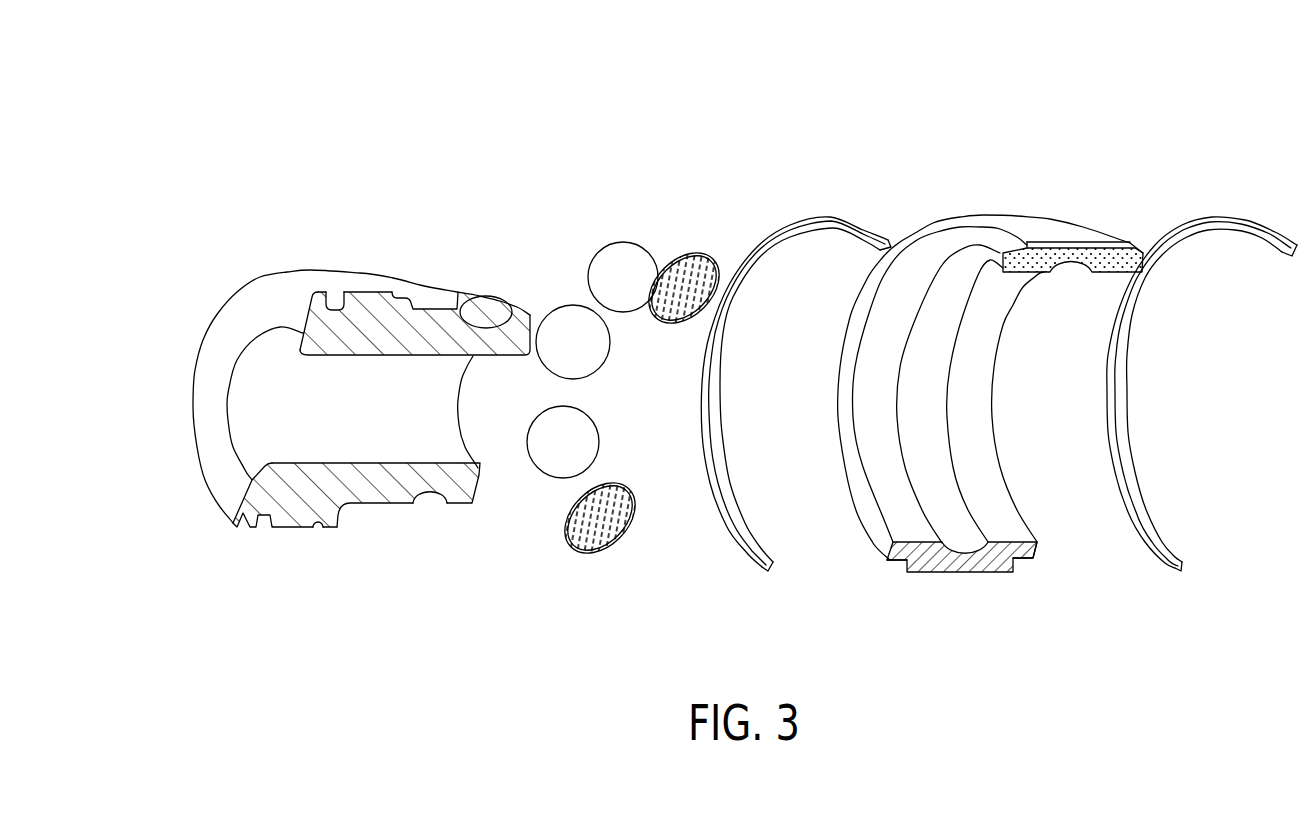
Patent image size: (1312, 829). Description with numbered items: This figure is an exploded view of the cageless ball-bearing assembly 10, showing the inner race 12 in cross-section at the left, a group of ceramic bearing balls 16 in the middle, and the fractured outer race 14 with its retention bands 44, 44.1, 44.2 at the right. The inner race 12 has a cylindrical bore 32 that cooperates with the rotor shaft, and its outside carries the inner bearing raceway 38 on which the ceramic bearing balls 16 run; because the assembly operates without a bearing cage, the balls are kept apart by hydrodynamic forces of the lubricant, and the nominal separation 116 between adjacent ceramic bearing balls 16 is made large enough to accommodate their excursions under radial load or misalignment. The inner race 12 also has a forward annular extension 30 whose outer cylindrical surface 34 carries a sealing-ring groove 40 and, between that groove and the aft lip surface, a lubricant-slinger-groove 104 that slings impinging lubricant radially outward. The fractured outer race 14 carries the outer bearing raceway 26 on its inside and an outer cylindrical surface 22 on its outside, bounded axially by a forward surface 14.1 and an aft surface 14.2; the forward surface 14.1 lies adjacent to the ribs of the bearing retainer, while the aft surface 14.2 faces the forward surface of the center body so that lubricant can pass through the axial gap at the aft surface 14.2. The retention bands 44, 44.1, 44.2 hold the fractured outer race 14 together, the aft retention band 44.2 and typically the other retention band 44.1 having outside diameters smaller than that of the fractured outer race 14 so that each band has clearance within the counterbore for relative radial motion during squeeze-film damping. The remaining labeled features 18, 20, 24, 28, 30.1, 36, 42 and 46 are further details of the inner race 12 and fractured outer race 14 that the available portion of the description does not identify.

The ball-bearing assembly 10 is at (1199, 151).
The inner race 12 is at (377, 505).
The fractured outer race 14 is at (967, 572).
The forward surface of the fractured outer race 14.1 is at (890, 545).
The aft surface of the fractured outer race 14.2 is at (1037, 557).
The ceramic bearing balls 16 is at (610, 342).
The base body 18 is at (1089, 229).
The intermediate layer 20 is at (1085, 245).
The outer cylindrical surface of the fractured outer race 22 is at (1027, 228).
The base body material 24 is at (1089, 229).
The outer bearing raceway 26 is at (953, 516).
The recess 28 is at (430, 464).
The forward annular extension 30 is at (337, 547).
The contact edge 30.1 is at (219, 549).
The cylindrical bore 32 is at (357, 419).
The outer cylindrical surface of the forward annular extension 34 is at (352, 280).
The recess 36 is at (434, 306).
The inner bearing raceway 38 is at (490, 308).
The sealing-ring groove 40 is at (330, 295).
The coating 42 is at (1113, 253).
The retention bands 44 is at (999, 425).
The retention band 44.1 is at (767, 573).
The aft retention band 44.2 is at (1173, 572).
The edge 46 is at (935, 214).
The lubricant-slinger-groove 104 is at (316, 527).
The nominal separation 116 is at (558, 492).